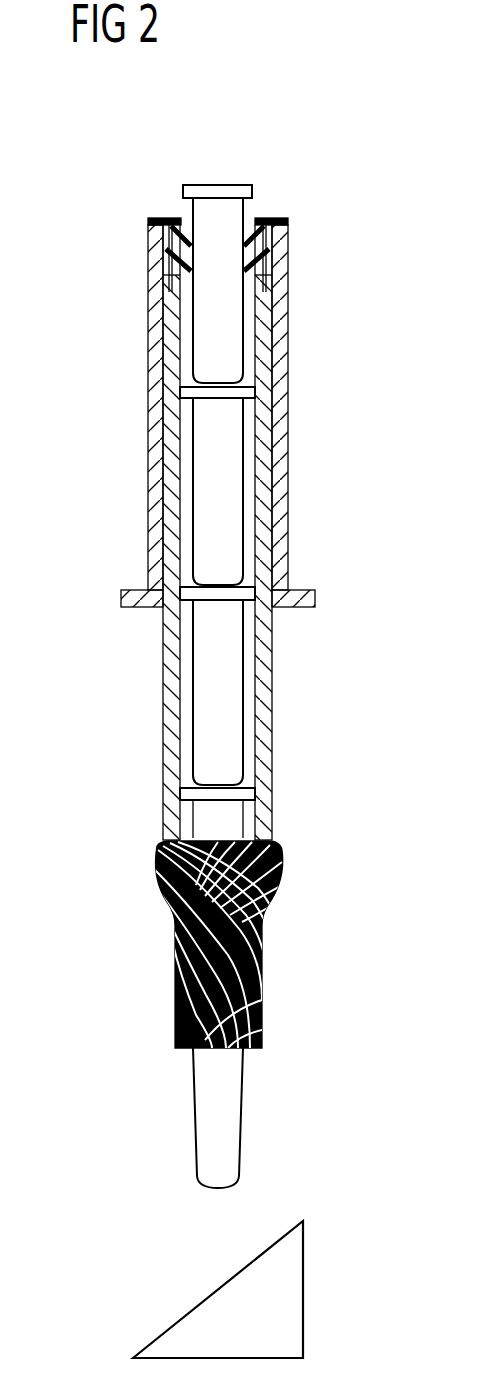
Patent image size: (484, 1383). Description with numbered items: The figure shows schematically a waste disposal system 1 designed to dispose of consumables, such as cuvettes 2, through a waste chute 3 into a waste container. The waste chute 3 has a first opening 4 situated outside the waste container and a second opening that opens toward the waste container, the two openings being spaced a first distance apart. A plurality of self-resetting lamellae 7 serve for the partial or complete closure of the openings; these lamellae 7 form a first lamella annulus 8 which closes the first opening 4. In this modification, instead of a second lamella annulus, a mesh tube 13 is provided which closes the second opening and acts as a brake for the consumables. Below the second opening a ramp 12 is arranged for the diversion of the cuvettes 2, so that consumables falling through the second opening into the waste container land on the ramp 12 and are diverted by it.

The waste disposal system 1 is at (138, 142).
The cuvettes 2 is at (232, 330).
The waste chute 3 is at (172, 362).
The first opening 4 is at (268, 190).
The self-resetting lamellae 7 is at (170, 248).
The first lamella annulus 8 is at (286, 219).
The ramp 12 is at (303, 1298).
The mesh tube 13 is at (262, 953).